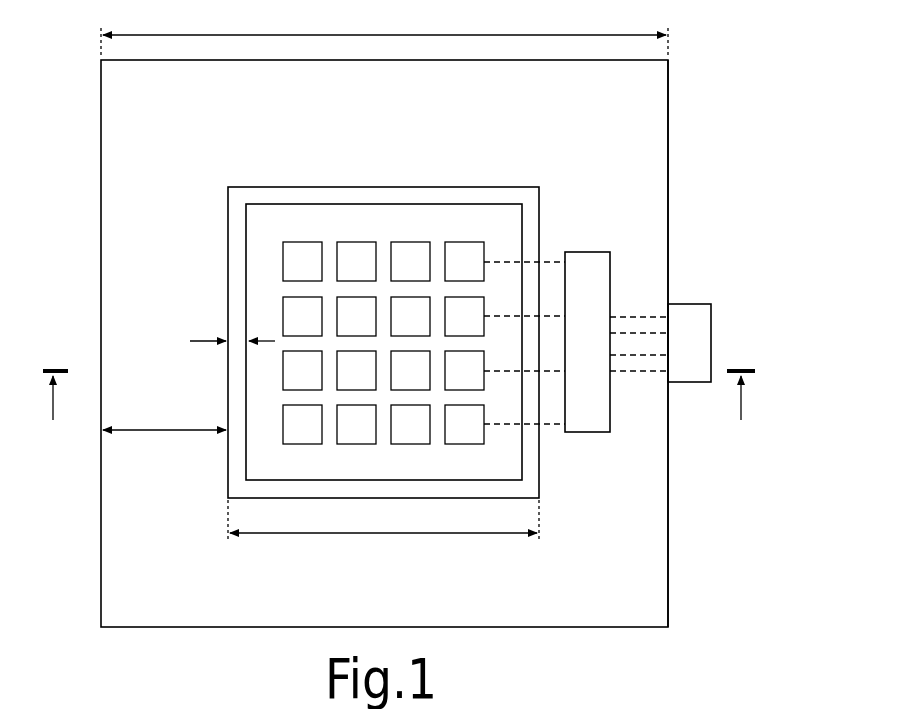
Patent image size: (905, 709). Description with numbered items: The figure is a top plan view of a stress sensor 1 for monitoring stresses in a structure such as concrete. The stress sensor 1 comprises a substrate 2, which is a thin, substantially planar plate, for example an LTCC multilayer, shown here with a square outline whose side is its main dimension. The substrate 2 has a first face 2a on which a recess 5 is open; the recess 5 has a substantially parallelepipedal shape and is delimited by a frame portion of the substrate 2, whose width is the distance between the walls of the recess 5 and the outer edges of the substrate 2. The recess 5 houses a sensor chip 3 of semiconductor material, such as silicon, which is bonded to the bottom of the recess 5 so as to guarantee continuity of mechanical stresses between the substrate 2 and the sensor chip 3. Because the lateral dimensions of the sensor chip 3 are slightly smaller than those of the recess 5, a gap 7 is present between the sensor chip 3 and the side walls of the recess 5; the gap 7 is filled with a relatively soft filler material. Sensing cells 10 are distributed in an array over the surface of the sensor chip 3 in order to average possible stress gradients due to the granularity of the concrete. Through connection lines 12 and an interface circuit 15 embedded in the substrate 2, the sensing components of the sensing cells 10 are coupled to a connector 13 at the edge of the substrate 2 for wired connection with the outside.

The stress sensor 1 is at (742, 76).
The substrate 2 is at (100, 204).
The first face 2a is at (648, 158).
The sensor chip 3 is at (476, 222).
The recess 5 is at (368, 192).
The gap 7 is at (236, 314).
The sensing cells 10 is at (292, 272).
The connection lines 12 is at (547, 316).
The connector 13 is at (706, 322).
The interface circuit 15 is at (604, 434).